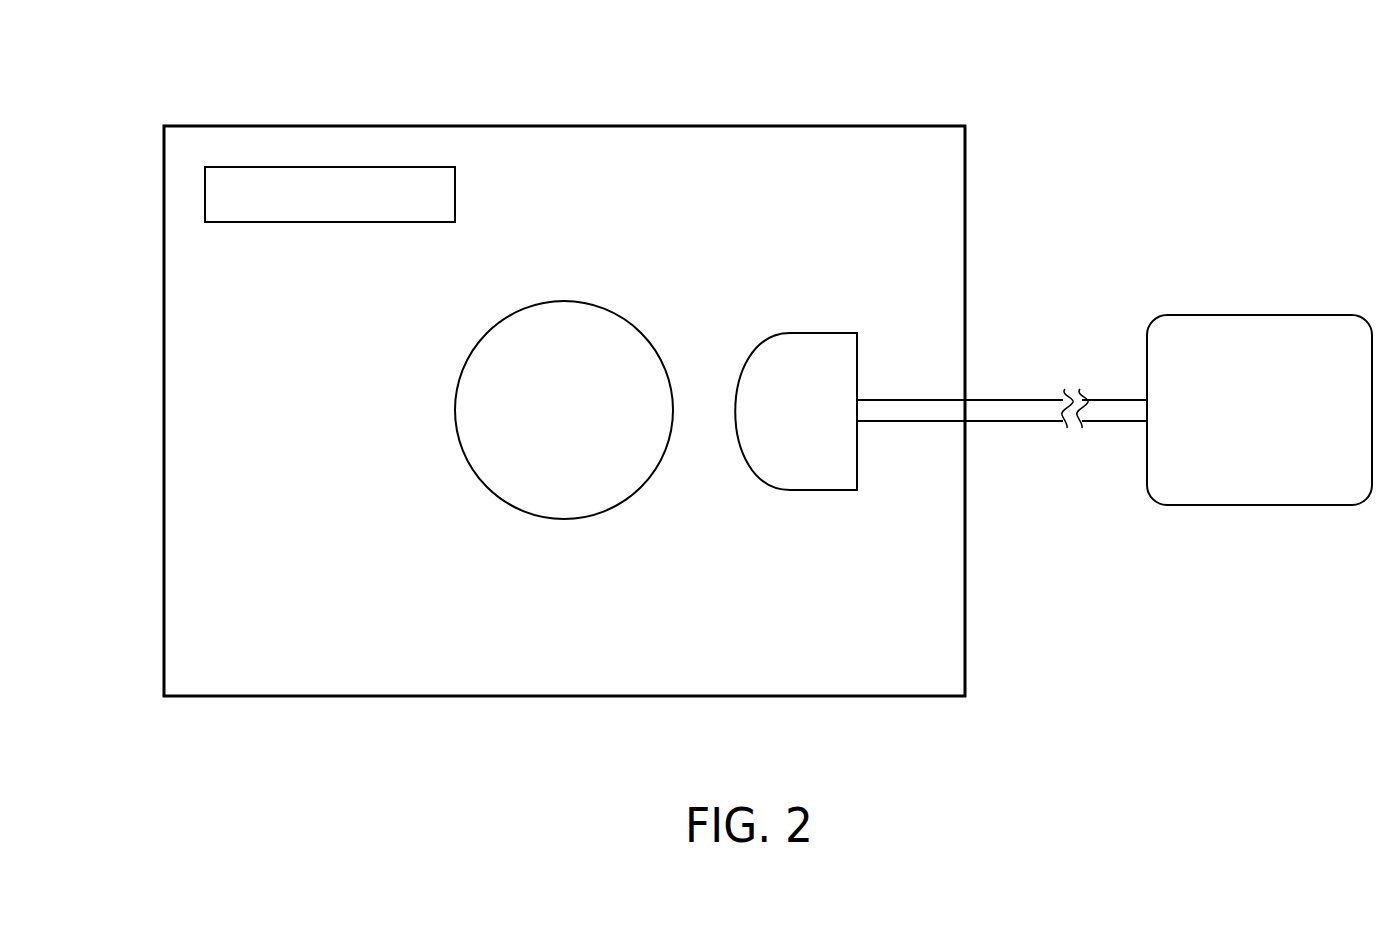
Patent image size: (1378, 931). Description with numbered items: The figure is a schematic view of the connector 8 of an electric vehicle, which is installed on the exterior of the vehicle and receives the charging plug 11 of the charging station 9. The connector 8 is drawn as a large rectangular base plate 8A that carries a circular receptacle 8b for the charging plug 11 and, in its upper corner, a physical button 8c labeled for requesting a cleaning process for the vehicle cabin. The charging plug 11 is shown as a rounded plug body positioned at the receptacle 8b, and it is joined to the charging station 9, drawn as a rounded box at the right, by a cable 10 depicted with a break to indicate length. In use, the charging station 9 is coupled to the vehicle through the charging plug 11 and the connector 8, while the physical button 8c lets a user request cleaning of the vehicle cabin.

The connector 8 is at (792, 96).
The base plate 8A is at (945, 170).
The receptacle 8b is at (607, 318).
The physical button 8c is at (363, 213).
The charging station 9 is at (1243, 493).
The cable 10 is at (988, 417).
The charging plug 11 is at (810, 491).